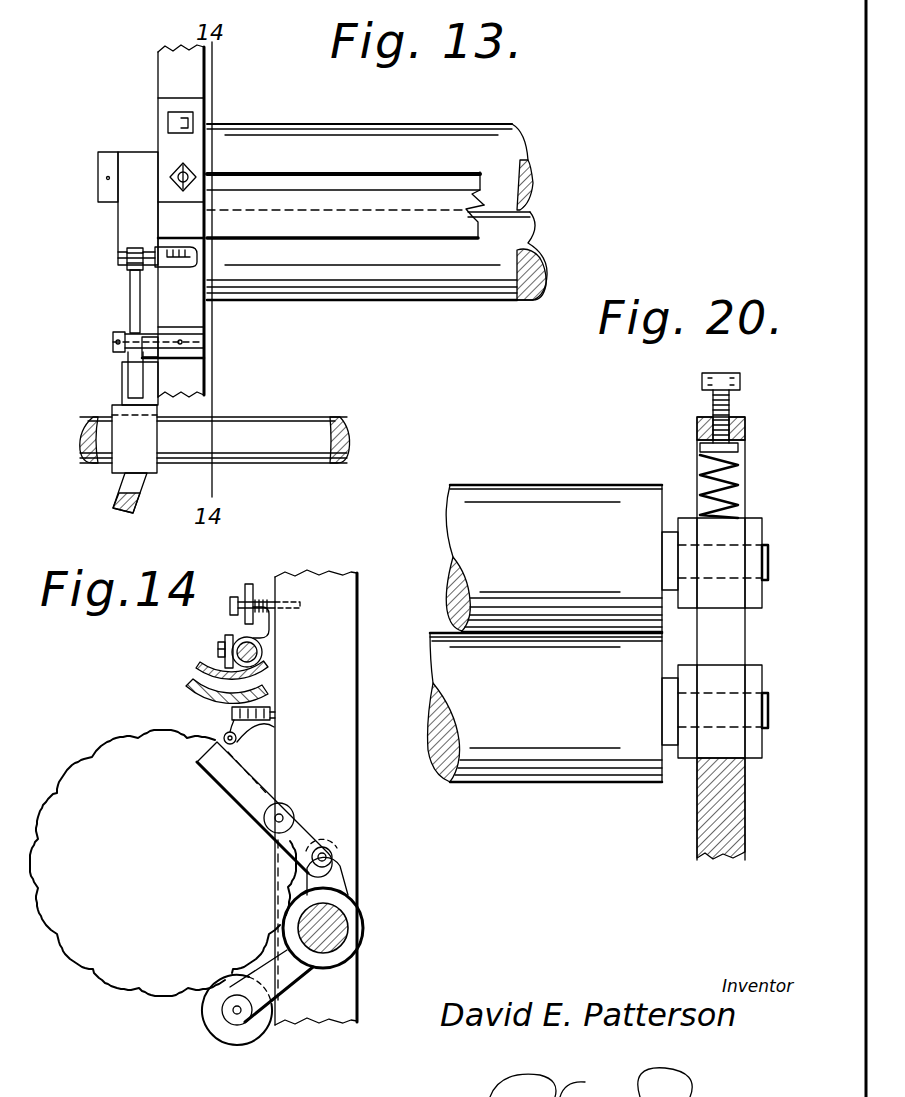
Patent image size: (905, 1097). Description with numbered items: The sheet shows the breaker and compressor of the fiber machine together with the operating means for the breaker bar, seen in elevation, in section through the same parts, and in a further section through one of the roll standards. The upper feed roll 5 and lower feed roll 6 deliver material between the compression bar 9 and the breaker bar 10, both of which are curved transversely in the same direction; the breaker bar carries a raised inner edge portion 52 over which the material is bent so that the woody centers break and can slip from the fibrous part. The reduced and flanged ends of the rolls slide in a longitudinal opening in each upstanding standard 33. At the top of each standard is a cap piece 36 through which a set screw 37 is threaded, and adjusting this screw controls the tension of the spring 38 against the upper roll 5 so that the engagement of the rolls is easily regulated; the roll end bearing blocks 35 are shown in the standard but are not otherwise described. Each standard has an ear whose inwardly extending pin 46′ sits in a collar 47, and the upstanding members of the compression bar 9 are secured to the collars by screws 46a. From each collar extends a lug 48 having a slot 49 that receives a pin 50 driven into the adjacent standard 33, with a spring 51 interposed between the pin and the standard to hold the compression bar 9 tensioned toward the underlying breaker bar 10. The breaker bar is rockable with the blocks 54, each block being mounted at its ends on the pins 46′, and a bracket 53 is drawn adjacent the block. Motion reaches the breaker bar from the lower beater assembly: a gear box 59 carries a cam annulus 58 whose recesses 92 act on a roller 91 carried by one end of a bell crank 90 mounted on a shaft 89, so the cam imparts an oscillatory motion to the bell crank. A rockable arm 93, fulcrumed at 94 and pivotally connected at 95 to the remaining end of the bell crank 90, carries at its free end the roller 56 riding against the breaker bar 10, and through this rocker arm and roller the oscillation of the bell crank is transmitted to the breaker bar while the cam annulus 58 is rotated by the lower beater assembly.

In FIG. 13, the upper feed roll 5 is at (295, 146).
In FIG. 20, the upper feed roll 5 is at (556, 502).
In FIG. 13, the lower feed roll 6 is at (340, 273).
In FIG. 20, the lower feed roll 6 is at (575, 772).
In FIG. 13, the compression bar 9 is at (297, 191).
In FIG. 14, the compression bar 9 is at (224, 656).
In FIG. 13, the breaker bar 10 is at (393, 222).
In FIG. 14, the breaker bar 10 is at (193, 691).
In FIG. 13, the standard 33 is at (200, 83).
In FIG. 14, the standard 33 is at (352, 626).
In FIG. 20, the standard 33 is at (697, 820).
In FIG. 20, the bearing block 35 is at (758, 524).
In FIG. 20, the cap piece 36 is at (745, 420).
In FIG. 20, the set screw 37 is at (710, 402).
In FIG. 20, the spring 38 is at (736, 472).
In FIG. 13, the pin 46′ is at (448, 181).
In FIG. 14, the pin 46′ is at (263, 657).
In FIG. 14, the screw 46a is at (218, 648).
In FIG. 14, the collar 47 is at (232, 626).
In FIG. 14, the lug 48 is at (250, 584).
In FIG. 13, the slot 49 is at (174, 169).
In FIG. 13, the pin 50 is at (197, 122).
In FIG. 14, the pin 50 is at (228, 605).
In FIG. 14, the spring 51 is at (264, 596).
In FIG. 13, the raised inner edge portion 52 is at (350, 206).
In FIG. 14, the raised inner edge portion 52 is at (197, 676).
In FIG. 14, the bracket 53 is at (266, 709).
In FIG. 13, the block 54 is at (128, 219).
In FIG. 14, the block 54 is at (270, 718).
In FIG. 13, the roller 56 is at (122, 260).
In FIG. 14, the roller 56 is at (225, 733).
In FIG. 14, the cam annulus 58 is at (123, 990).
In FIG. 14, the gear box 59 is at (82, 790).
In FIG. 13, the shaft 89 is at (285, 421).
In FIG. 13, the bell crank 90 is at (145, 431).
In FIG. 14, the bell crank 90 is at (363, 924).
In FIG. 14, the roller 91 is at (205, 1022).
In FIG. 14, the recess 92 is at (72, 950).
In FIG. 13, the rockable arm 93 is at (128, 301).
In FIG. 14, the rockable arm 93 is at (268, 790).
In FIG. 13, the fulcrum 94 is at (113, 339).
In FIG. 14, the fulcrum 94 is at (292, 812).
In FIG. 13, the pivotal connection 95 is at (126, 375).
In FIG. 14, the pivotal connection 95 is at (334, 853).